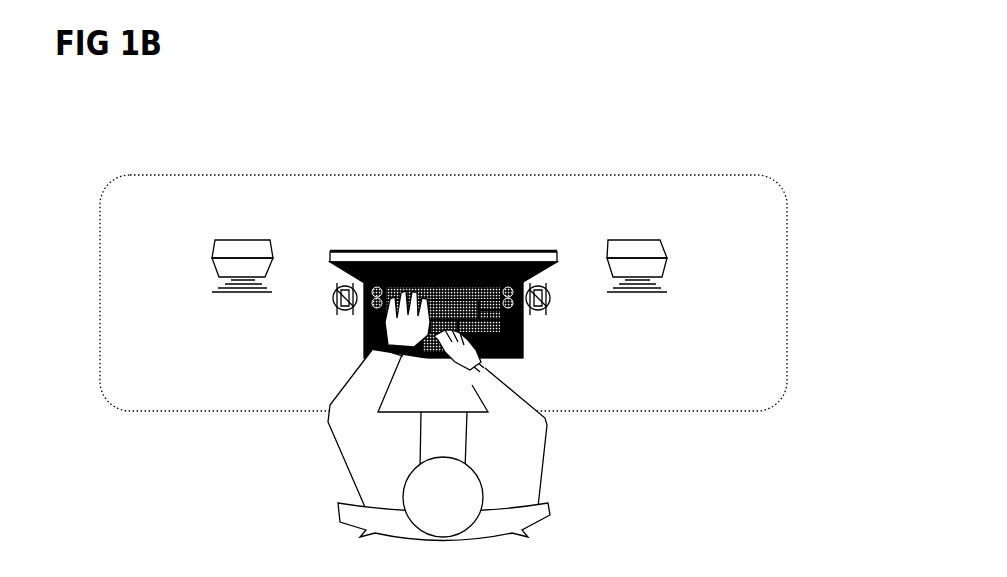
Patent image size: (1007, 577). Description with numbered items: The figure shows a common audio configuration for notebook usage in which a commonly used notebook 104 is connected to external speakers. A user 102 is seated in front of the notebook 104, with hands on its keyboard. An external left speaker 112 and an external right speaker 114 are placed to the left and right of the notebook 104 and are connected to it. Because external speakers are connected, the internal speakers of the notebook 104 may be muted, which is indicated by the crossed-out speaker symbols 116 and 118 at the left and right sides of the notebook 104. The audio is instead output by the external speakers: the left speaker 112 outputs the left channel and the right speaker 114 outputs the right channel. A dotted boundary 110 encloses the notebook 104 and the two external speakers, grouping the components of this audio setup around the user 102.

The user 102 is at (357, 450).
The notebook 104 is at (450, 278).
The environment 110 is at (773, 113).
The left speaker 112 is at (252, 262).
The right speaker 114 is at (653, 265).
The muted internal speaker 116 is at (338, 317).
The muted internal speaker 118 is at (553, 307).